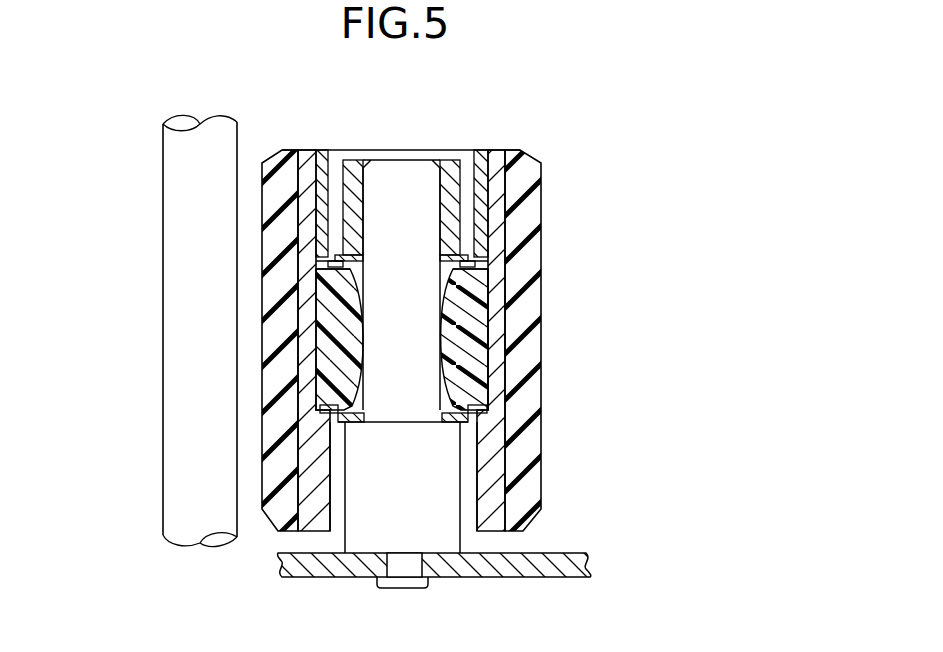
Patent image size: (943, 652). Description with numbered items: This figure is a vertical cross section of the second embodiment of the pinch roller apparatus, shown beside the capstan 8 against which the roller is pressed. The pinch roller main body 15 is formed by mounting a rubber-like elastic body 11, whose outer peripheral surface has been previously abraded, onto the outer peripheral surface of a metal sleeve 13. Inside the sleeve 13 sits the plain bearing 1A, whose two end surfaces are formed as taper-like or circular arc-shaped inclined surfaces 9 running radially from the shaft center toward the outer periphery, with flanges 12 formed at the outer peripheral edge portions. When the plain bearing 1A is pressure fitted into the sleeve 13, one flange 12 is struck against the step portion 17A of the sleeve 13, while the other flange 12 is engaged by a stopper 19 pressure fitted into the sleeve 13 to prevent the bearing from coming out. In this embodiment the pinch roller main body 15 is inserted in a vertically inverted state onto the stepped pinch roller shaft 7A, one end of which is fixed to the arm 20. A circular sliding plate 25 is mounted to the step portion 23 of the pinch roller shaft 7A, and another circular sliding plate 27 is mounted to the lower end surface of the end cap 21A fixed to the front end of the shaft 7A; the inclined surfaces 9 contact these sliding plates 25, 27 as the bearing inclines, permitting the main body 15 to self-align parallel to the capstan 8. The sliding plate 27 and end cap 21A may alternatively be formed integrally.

The plain bearing 1A is at (478, 340).
The pinch roller shaft 7A is at (438, 518).
The capstan 8 is at (185, 318).
The inclined surface 9 is at (328, 370).
The rubber-like elastic body 11 is at (603, 503).
The flange 12 is at (322, 403).
The metal sleeve 13 is at (495, 485).
The pinch roller main body 15 is at (464, 340).
The step portion 17A is at (487, 390).
The stopper 19 is at (331, 168).
The arm 20 is at (547, 567).
The end cap 21A is at (452, 180).
The step portion 23 is at (399, 421).
The circular sliding plate 25 is at (340, 421).
The circular sliding plate 27 is at (330, 256).